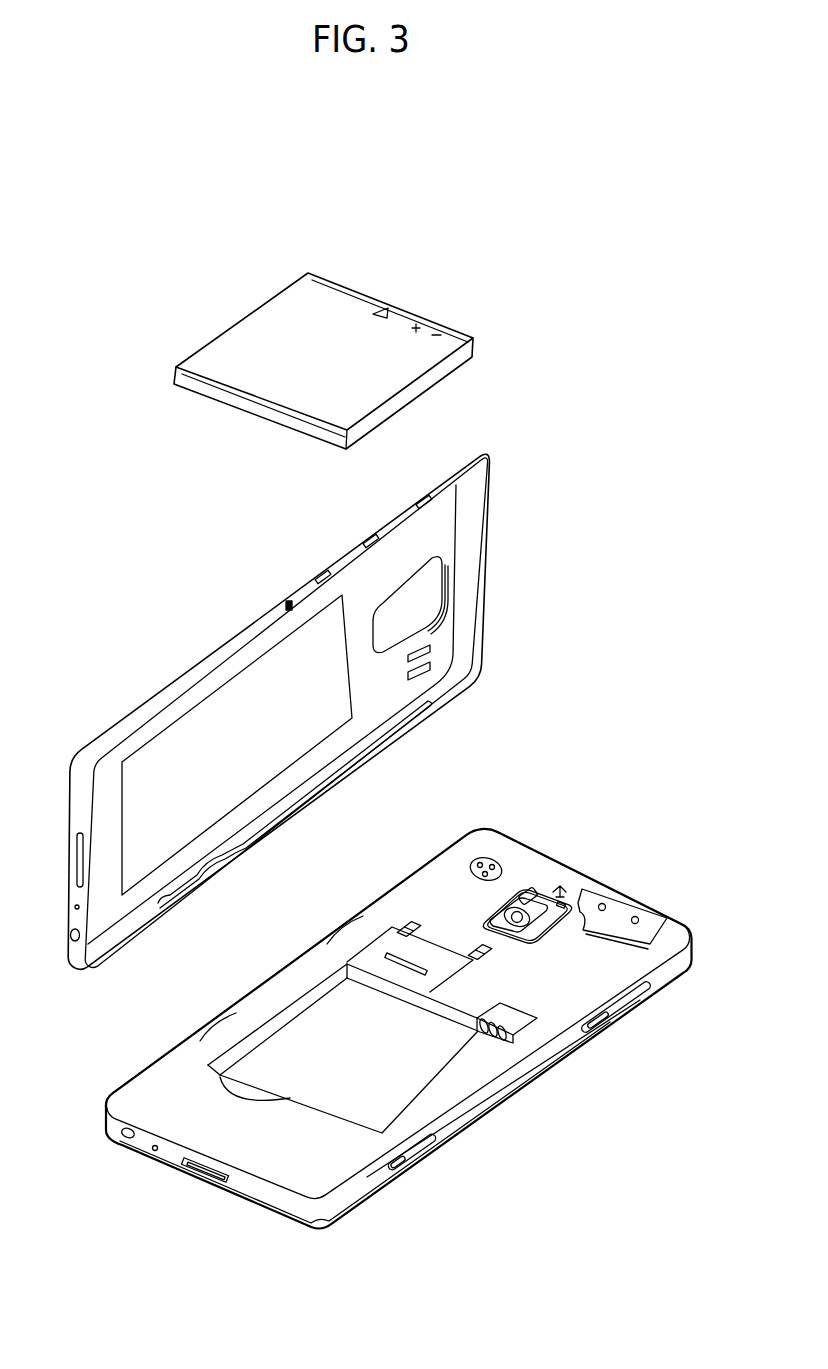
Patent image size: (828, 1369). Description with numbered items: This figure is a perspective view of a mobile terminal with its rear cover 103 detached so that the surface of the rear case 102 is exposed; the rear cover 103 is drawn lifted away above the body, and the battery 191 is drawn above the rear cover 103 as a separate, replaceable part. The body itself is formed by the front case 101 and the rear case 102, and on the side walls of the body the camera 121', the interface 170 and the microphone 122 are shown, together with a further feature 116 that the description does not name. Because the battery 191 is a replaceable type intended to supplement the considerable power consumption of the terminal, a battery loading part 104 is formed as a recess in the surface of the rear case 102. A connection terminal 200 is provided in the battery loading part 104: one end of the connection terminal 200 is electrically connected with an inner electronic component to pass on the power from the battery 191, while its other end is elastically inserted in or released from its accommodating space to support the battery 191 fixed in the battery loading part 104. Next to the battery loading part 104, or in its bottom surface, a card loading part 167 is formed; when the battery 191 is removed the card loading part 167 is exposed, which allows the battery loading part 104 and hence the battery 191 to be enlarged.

The battery 191 is at (342, 307).
The rear cover 103 is at (462, 497).
The rear case 102 is at (187, 1070).
The front case 101 is at (387, 1186).
The battery loading part 104 is at (297, 1040).
The card loading part 167 is at (397, 953).
The camera 121' is at (537, 877).
The connection terminal 200 is at (515, 1036).
The earphone jack 116 is at (116, 1141).
The microphone 122 is at (156, 1152).
The interface 170 is at (212, 1176).